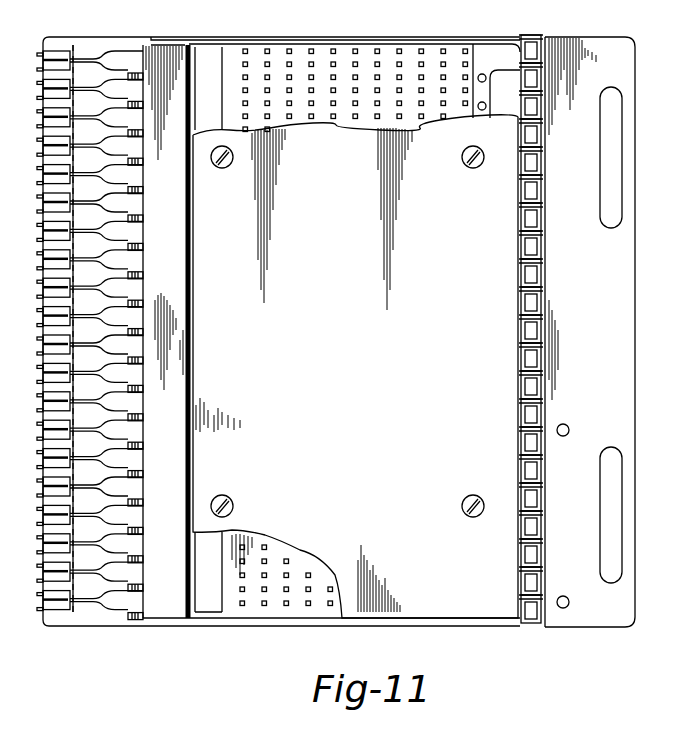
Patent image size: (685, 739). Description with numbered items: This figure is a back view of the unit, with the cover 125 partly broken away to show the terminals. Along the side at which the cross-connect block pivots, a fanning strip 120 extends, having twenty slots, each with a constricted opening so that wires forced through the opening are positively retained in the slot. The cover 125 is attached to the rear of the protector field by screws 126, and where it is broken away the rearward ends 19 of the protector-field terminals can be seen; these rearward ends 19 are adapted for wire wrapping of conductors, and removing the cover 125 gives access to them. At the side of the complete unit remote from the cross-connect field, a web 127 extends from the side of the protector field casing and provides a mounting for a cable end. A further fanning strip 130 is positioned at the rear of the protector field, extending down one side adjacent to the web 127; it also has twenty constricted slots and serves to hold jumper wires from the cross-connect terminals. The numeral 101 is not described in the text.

The connector housing 101 is at (50, 45).
The fanning strip 120 is at (53, 275).
The rearward ends 19 is at (355, 63).
The cover 125 is at (355, 366).
The screws 126 is at (463, 155).
The further fanning strip 130 is at (529, 48).
The web 127 is at (598, 45).